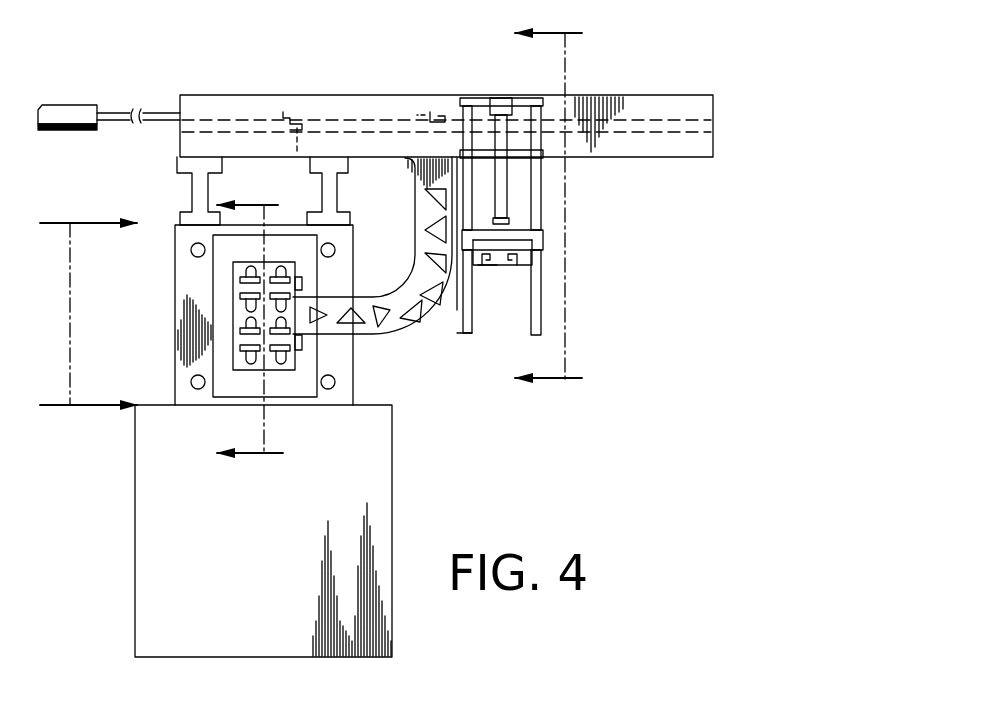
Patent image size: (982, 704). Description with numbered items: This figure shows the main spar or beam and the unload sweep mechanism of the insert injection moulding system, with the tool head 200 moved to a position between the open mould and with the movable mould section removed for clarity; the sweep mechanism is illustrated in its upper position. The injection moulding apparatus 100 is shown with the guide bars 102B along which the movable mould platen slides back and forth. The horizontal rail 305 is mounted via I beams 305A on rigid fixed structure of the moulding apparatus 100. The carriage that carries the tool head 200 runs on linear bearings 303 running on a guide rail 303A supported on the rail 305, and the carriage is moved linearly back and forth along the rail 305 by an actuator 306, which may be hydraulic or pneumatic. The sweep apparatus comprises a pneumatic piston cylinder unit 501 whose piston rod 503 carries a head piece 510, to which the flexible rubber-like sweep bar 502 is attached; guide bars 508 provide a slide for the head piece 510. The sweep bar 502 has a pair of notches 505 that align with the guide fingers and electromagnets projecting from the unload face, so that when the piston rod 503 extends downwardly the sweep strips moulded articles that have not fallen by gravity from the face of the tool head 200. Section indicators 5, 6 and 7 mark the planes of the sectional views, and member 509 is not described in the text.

The section line 5- 5 is at (548, 210).
The section line 6- 6 is at (89, 315).
The section line 7- 7 is at (249, 331).
The injection moulding apparatus 100 is at (193, 281).
The guide bars 102B is at (191, 251).
The tool head 200 is at (238, 316).
The linear bearings 303 is at (300, 128).
The guide rail 303A is at (657, 120).
The horizontal rail 305 is at (265, 103).
The I beams 305A is at (303, 162).
The actuator 306 is at (82, 108).
The pneumatic piston cylinder unit 501 is at (500, 176).
The sweep bar 502 is at (508, 258).
The piston rod 503 is at (497, 260).
The notches 505 is at (517, 255).
The guide bars 508 is at (457, 333).
The legs 509 is at (540, 323).
The head piece 510 is at (537, 241).